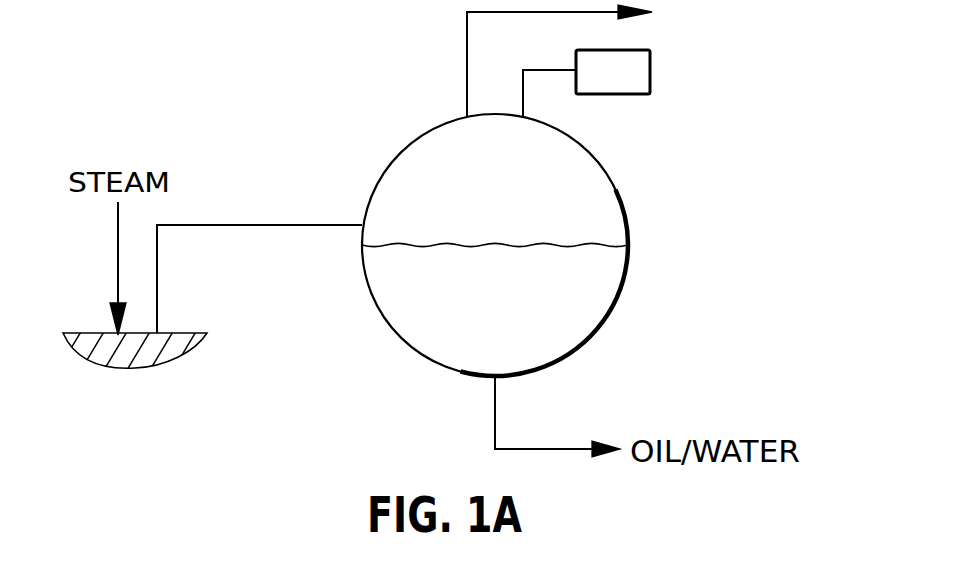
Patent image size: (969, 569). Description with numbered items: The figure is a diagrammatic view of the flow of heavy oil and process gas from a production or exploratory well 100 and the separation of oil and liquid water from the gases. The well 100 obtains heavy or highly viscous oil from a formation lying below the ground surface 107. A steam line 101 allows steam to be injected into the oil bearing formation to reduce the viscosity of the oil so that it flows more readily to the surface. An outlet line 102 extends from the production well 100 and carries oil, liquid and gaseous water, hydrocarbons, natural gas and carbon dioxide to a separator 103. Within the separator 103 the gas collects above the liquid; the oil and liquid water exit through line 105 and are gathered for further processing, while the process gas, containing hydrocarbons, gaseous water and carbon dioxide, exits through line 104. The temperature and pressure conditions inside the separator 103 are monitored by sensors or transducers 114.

The production well 100 is at (162, 356).
The steam line 101 is at (118, 246).
The outlet line 102 is at (310, 225).
The separator 103 is at (612, 175).
The process gas line 104 is at (467, 49).
The oil and liquid water line 105 is at (548, 448).
The ground surface 107 is at (173, 333).
The sensors or transducers 114 is at (652, 78).